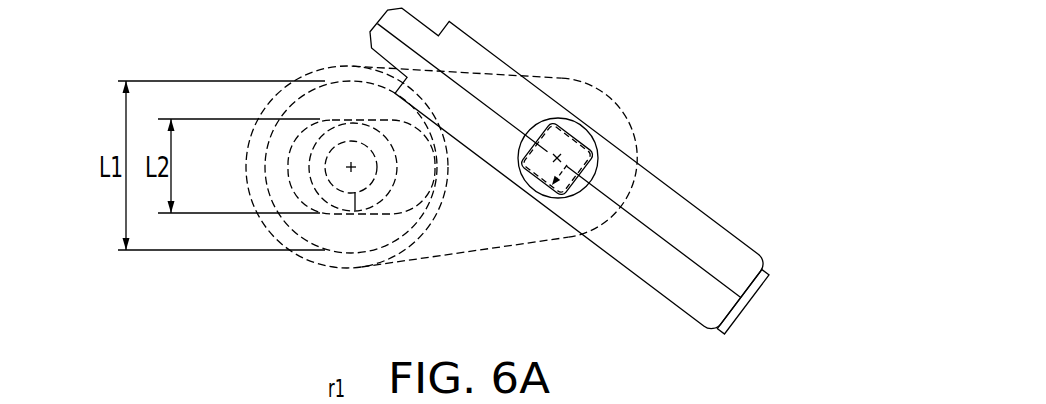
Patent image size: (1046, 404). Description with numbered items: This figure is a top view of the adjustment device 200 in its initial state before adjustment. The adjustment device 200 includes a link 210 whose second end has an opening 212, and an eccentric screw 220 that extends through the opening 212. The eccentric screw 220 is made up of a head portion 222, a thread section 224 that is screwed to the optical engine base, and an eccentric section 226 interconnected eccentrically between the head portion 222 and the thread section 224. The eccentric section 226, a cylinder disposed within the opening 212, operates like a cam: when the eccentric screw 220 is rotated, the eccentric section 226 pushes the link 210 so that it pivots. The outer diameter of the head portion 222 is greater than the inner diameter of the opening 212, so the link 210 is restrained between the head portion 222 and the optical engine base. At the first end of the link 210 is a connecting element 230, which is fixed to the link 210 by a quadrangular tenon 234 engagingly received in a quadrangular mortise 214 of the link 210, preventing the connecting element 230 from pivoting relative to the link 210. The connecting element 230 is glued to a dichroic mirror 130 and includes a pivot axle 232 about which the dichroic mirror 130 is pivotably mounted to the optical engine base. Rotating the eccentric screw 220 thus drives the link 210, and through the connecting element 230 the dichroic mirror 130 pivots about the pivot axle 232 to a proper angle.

The adjustment device 200 is at (212, 270).
The link 210 is at (533, 246).
The opening 212 is at (292, 166).
The mortise 214 is at (640, 116).
The eccentric screw 220 is at (398, 322).
The head portion 222 is at (302, 238).
The thread section 224 is at (353, 213).
The eccentric section 226 is at (399, 168).
The connecting element 230 is at (722, 243).
The pivot axle 232 is at (537, 127).
The tenon 234 is at (557, 140).
The dichroic mirror 130 is at (762, 274).